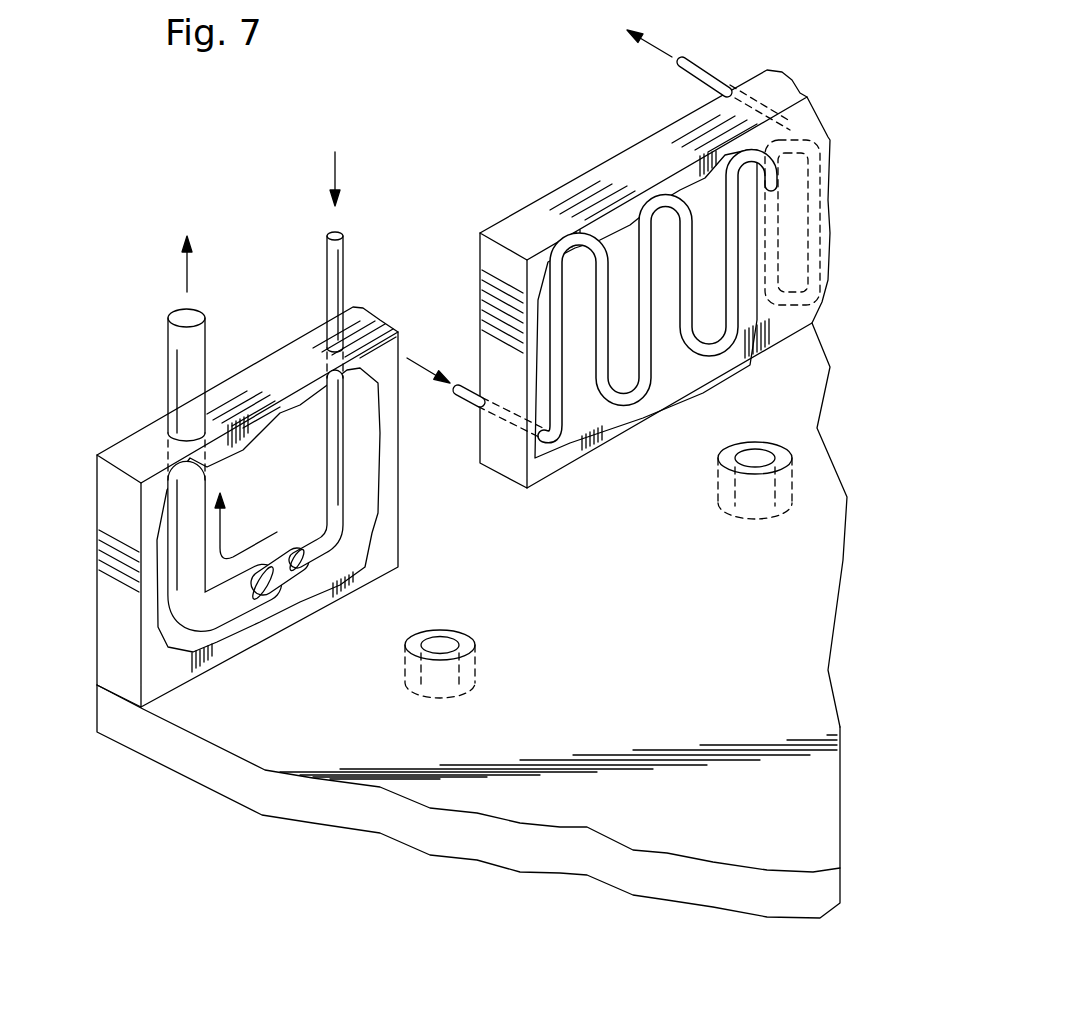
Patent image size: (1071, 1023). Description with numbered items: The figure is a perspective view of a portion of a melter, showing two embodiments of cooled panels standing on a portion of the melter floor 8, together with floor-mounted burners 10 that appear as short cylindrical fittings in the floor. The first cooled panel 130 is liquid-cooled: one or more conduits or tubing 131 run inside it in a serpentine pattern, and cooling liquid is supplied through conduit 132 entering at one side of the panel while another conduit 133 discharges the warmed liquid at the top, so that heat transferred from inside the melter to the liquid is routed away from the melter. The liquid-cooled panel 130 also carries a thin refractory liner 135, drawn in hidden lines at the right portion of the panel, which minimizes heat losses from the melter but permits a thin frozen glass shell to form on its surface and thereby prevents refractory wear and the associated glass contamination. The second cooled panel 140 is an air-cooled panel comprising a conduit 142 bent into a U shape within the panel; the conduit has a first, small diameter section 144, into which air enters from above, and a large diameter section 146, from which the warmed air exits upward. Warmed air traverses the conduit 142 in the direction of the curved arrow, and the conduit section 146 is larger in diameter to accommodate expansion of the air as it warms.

The melter floor 8 is at (691, 677).
The floor-mounted burner 10 is at (787, 443).
The first cooled panel 130 is at (768, 77).
The conduits or tubing 131 is at (655, 203).
The conduit 132 is at (468, 383).
The conduit 133 is at (693, 78).
The thin refractory liner 135 is at (795, 198).
The cooled panel 140 is at (117, 455).
The conduit 142 is at (192, 485).
The first, small diameter section 144 is at (327, 268).
The large diameter section 146 is at (167, 372).